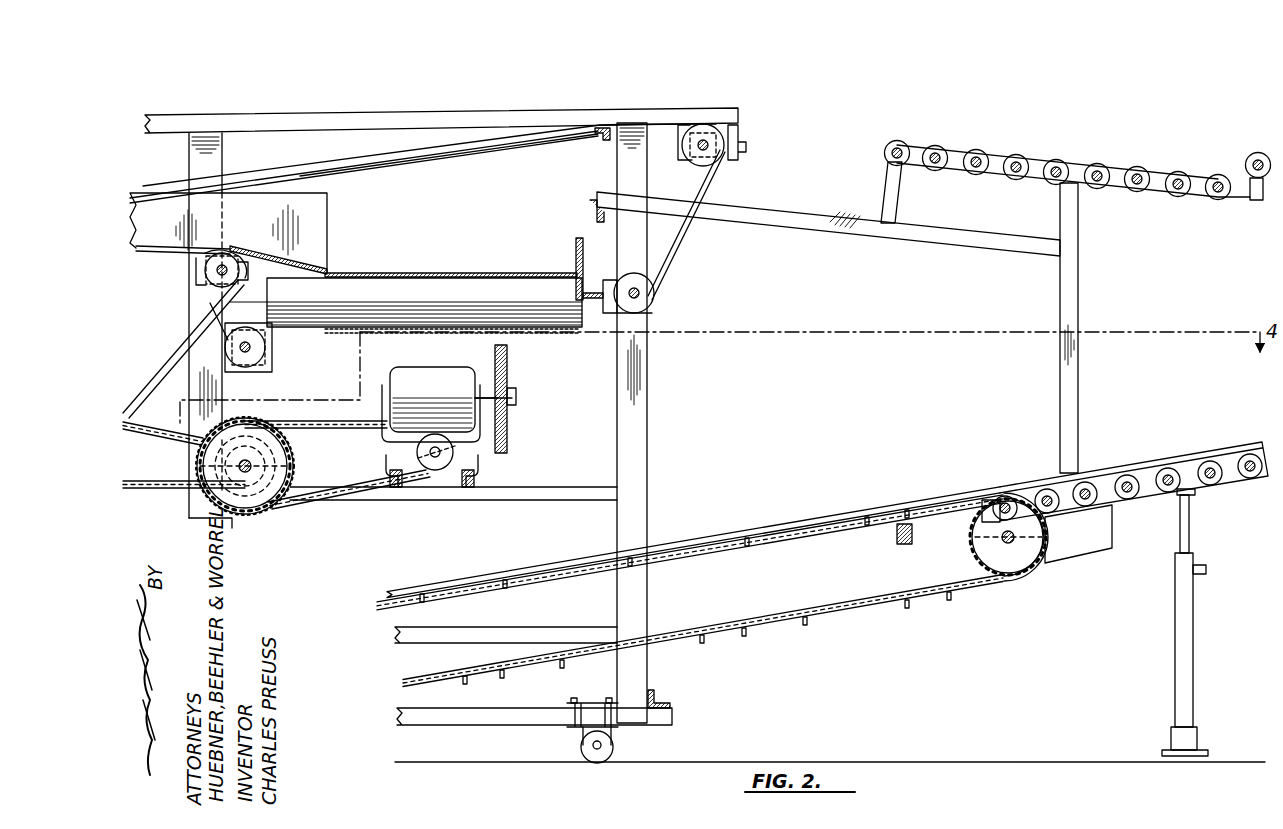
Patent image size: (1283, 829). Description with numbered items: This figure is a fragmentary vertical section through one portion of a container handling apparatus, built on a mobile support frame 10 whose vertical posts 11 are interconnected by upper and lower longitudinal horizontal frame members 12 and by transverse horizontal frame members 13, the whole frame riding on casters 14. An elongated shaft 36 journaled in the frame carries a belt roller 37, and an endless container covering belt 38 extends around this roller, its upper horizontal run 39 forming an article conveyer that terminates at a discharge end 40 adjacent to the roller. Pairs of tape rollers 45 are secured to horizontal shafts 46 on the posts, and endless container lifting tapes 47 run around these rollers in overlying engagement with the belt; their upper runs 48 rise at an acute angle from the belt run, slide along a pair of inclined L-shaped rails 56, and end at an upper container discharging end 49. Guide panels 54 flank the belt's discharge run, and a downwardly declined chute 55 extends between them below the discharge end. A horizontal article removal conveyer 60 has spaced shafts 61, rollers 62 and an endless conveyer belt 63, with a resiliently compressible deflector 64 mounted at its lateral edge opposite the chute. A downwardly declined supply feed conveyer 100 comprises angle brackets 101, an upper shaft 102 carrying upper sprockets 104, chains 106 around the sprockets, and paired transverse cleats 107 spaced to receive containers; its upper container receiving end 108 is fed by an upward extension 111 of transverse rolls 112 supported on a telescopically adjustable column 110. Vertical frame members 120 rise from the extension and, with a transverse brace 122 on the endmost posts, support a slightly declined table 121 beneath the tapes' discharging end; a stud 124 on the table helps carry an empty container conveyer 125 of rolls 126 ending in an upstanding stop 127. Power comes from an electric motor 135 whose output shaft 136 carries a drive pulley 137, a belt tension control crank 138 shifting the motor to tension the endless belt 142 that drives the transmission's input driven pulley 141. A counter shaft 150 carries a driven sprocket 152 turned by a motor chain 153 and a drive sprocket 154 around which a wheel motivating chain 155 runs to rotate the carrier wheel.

The support frame 10 is at (652, 448).
The vertical posts 11 is at (188, 319).
The horizontal frame members 12 is at (297, 120).
The transverse horizontal frame members 13 is at (603, 137).
The casters 14 is at (615, 748).
The shaft 36 is at (216, 273).
The belt roller 37 is at (207, 267).
The container covering belt 38 is at (125, 413).
The upper horizontal run 39 is at (138, 247).
The discharge end 40 is at (227, 252).
The tape rollers 45 is at (705, 166).
The horizontal shafts 46 is at (699, 147).
The container lifting tapes 47 is at (690, 233).
The upper runs 48 is at (305, 168).
The container discharging end 49 is at (712, 129).
The guide panels 54 is at (318, 207).
The chute 55 is at (310, 262).
The L-shaped rails 56 is at (402, 147).
The article removal conveyer 60 is at (452, 272).
The conveyer shafts 61 is at (594, 300).
The rollers 62 is at (537, 298).
The conveyer belt 63 is at (495, 272).
The deflector 64 is at (577, 240).
The supply feed conveyer 100 is at (806, 614).
The angle brackets 101 is at (805, 527).
The upper shaft 102 is at (1013, 543).
The upper sprockets 104 is at (1007, 556).
The chains 106 is at (832, 533).
The cleats 107 is at (906, 510).
The container receiving end 108 is at (1090, 468).
The telescopically adjustable column 110 is at (1194, 638).
The upward extension 111 is at (1140, 495).
The rolls 112 is at (1210, 470).
The vertical frame members 120 is at (1068, 294).
The table 121 is at (852, 226).
The transverse horizontal brace 122 is at (596, 213).
The stud 124 is at (902, 194).
The empty container conveyer 125 is at (1120, 167).
The rolls 126 is at (1013, 153).
The stop 127 is at (1255, 152).
The electric motor 135 is at (413, 385).
The output shaft 136 is at (486, 395).
The drive pulley 137 is at (512, 404).
The belt tension control crank 138 is at (416, 455).
The input driven pulley 141 is at (508, 438).
The endless belt 142 is at (503, 368).
The counter shaft 150 is at (253, 467).
The driven sprocket 152 is at (265, 492).
The motor chain 153 is at (328, 497).
The drive sprocket 154 is at (243, 508).
The wheel motivating chain 155 is at (175, 488).